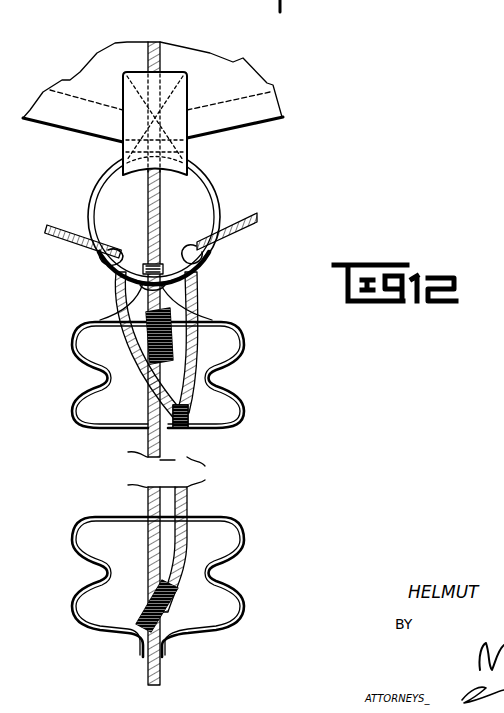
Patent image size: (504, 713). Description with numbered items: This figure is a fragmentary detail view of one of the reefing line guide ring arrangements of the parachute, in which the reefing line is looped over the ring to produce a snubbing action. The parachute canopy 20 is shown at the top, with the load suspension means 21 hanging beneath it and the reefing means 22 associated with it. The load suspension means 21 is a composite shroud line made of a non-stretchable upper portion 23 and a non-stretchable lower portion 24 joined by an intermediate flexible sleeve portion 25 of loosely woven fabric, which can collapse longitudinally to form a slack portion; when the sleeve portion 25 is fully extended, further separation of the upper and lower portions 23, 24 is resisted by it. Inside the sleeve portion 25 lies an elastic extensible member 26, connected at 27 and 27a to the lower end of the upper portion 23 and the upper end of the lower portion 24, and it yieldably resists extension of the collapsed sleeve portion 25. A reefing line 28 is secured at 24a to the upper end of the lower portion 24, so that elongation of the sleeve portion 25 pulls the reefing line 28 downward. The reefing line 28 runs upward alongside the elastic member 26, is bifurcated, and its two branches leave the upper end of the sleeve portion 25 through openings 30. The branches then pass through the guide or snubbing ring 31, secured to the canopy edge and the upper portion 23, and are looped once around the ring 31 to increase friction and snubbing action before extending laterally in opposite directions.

The parachute canopy 20 is at (258, 78).
The load suspension means 21 is at (252, 419).
The reefing means 22 is at (72, 225).
The upper portion of load suspension means 23 is at (163, 46).
The lower portion of load suspension means 24 is at (160, 668).
The reefing line securing point 24a is at (176, 612).
The intermediate flexible sleeve portion 25 is at (239, 392).
The elastic extensible member 26 is at (128, 452).
The upper connection of elastic member 27 is at (163, 262).
The lower connection of elastic member 27a is at (165, 648).
The reefing line 28 is at (205, 466).
The openings 30 is at (103, 322).
The guide or snubbing rings 31 is at (212, 186).